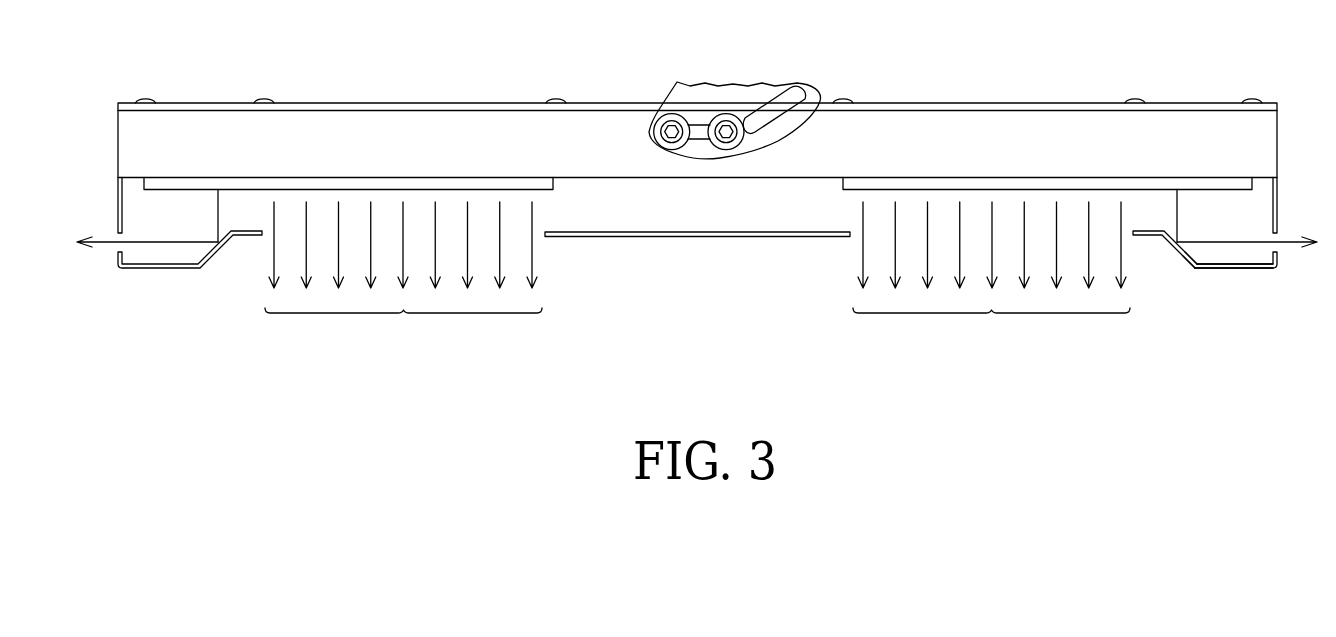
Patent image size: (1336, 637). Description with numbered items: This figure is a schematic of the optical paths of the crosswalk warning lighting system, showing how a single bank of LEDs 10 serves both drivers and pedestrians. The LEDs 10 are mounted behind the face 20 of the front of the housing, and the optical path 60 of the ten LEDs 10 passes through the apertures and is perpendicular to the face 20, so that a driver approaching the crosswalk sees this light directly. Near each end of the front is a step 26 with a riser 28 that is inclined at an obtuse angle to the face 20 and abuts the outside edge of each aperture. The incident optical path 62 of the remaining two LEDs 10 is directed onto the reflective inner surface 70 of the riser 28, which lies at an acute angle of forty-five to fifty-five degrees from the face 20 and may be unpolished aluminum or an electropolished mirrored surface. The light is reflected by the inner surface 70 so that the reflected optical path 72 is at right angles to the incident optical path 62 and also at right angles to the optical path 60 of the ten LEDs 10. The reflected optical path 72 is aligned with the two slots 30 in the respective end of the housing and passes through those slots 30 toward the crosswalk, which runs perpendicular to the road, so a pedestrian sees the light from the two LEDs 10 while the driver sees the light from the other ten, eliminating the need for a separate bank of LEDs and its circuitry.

The light emitting diode lights 10 is at (386, 183).
The face 20 is at (698, 237).
The step 26 is at (1260, 270).
The riser 28 is at (1188, 267).
The slots 30 is at (1280, 235).
The optical path 60 is at (697, 275).
The incident optical path 62 is at (1177, 207).
The inner surface 70 is at (1183, 255).
The reflected optical path 72 is at (1225, 243).